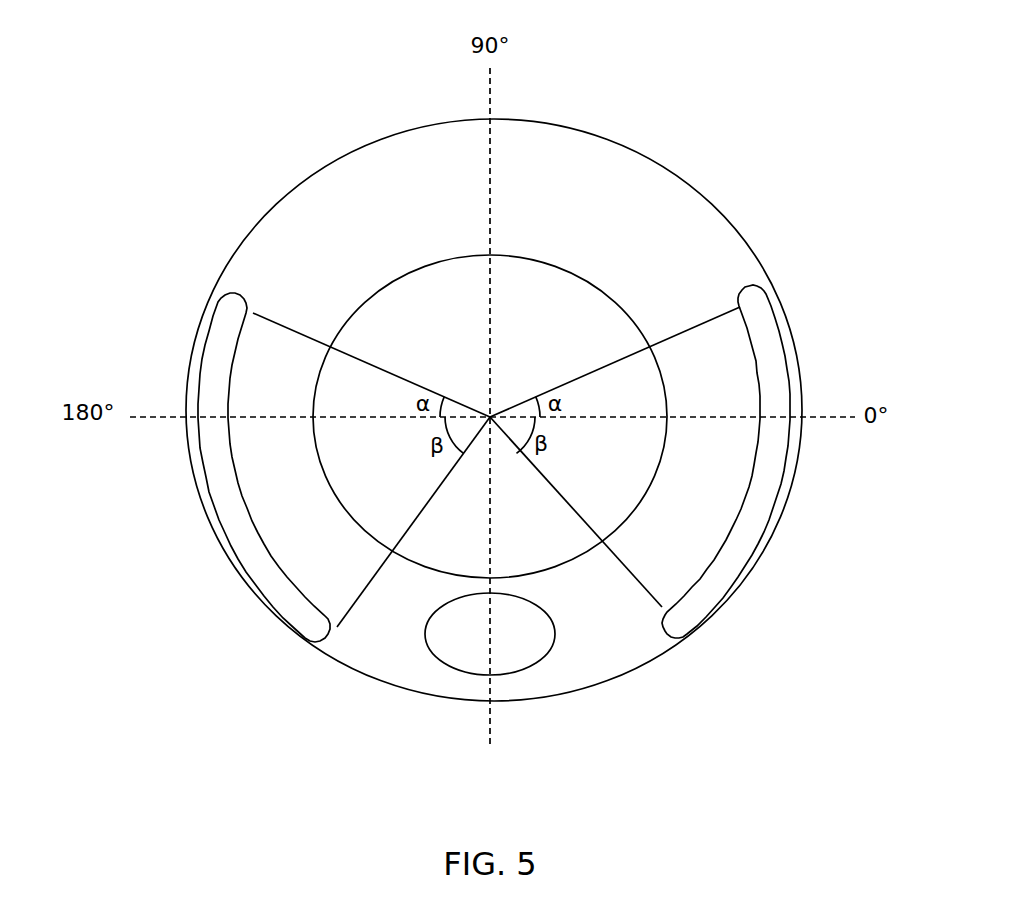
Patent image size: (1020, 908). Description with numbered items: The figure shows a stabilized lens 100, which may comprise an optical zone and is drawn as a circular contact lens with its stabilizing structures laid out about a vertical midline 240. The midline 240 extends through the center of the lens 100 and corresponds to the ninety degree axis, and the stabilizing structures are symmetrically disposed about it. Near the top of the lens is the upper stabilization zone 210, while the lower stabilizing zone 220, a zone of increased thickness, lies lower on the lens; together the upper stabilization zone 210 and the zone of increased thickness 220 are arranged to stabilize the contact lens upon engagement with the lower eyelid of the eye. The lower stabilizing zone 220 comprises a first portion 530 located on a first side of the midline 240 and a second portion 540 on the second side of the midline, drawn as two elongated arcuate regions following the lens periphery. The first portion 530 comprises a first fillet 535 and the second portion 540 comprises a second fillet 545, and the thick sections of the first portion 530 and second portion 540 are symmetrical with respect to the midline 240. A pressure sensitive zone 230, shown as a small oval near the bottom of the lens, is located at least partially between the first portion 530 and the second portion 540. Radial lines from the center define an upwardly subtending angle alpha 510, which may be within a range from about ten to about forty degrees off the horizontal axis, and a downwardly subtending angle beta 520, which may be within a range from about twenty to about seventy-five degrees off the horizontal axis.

The stabilized lens 100 is at (503, 394).
The upper stabilization zone 210 is at (331, 178).
The lower stabilizing zone 220 is at (474, 447).
The pressure sensitive zone 230 is at (437, 647).
The midline 240 is at (490, 163).
The upwardly subtending angle alpha 510 is at (567, 403).
The downwardly subtending angle beta 520 is at (430, 442).
The first portion 530 is at (220, 431).
The first fillet 535 is at (218, 348).
The second portion 540 is at (668, 585).
The second fillet 545 is at (739, 479).